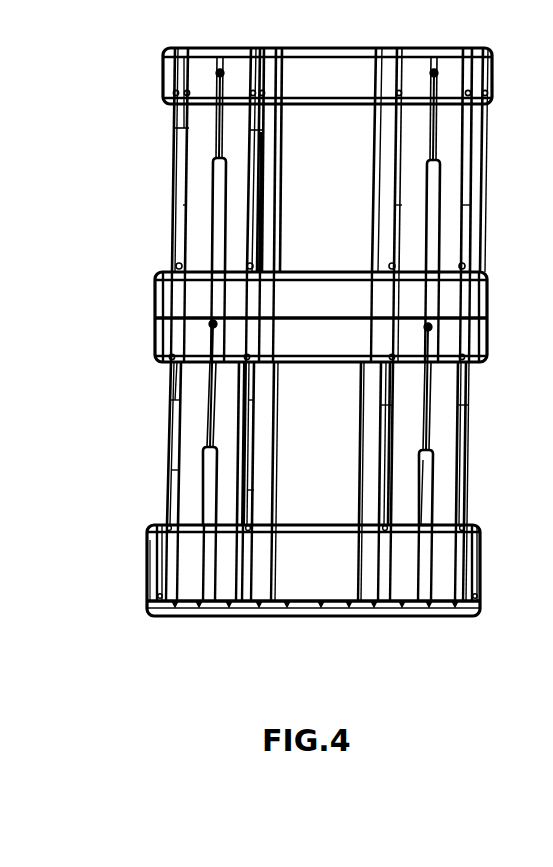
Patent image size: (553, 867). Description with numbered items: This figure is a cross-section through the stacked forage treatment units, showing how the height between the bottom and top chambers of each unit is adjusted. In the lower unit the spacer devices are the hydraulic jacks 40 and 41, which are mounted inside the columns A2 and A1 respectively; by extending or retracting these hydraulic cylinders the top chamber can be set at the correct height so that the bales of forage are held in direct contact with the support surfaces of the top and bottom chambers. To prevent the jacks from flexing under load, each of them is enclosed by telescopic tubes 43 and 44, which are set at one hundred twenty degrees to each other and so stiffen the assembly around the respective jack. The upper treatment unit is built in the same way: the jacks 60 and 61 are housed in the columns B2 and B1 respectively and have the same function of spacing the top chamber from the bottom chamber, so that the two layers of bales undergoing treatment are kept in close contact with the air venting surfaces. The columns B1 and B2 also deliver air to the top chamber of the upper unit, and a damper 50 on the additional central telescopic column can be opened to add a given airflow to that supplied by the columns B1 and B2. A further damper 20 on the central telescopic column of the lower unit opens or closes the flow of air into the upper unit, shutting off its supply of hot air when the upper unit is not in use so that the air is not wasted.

The damper 20 is at (348, 480).
The hydraulic jack 40 is at (210, 510).
The hydraulic jack 41 is at (420, 500).
The telescopic tube 43 is at (243, 427).
The telescopic tube 44 is at (392, 427).
The damper 50 is at (321, 276).
The hydraulic jack 60 is at (217, 228).
The hydraulic jack 61 is at (430, 228).
The column A1 is at (468, 453).
The column A2 is at (168, 464).
The column B1 is at (476, 151).
The column B2 is at (173, 163).